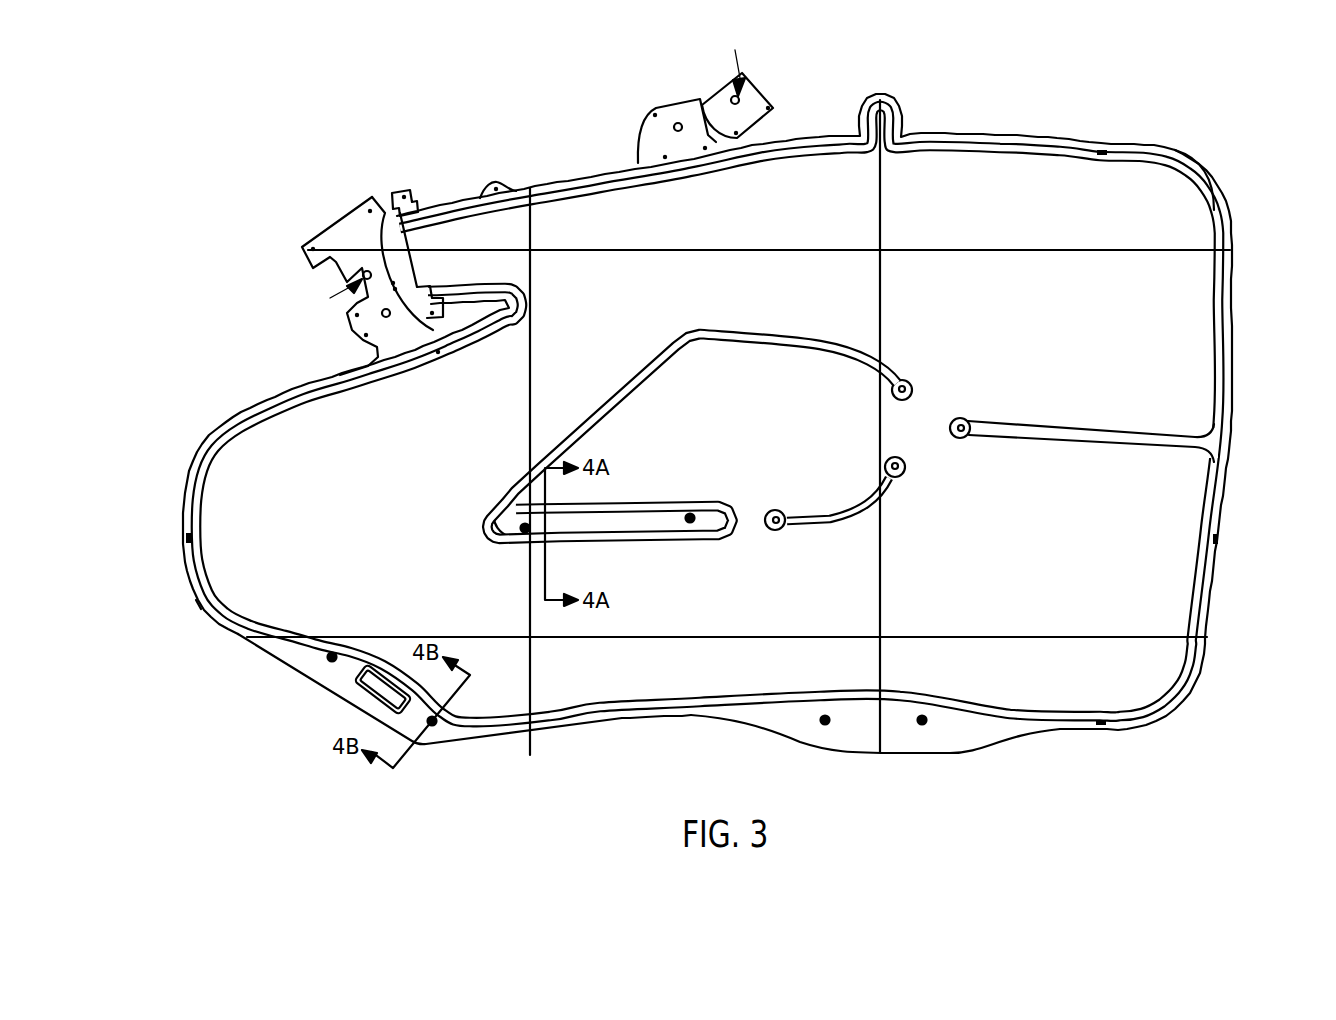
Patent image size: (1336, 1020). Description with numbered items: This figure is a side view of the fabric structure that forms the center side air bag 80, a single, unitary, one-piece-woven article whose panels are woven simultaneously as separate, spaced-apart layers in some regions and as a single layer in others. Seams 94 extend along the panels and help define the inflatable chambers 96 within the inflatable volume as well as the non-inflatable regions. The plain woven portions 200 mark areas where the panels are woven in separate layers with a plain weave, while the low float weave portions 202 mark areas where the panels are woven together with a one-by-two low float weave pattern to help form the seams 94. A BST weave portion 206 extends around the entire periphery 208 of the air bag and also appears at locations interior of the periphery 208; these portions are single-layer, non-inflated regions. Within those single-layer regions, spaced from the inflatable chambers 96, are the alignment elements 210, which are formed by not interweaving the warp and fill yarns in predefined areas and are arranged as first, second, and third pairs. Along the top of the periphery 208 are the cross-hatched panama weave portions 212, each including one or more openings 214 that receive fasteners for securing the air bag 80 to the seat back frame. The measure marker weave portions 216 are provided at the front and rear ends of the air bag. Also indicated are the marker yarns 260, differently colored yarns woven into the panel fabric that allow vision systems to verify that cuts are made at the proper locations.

The center side air bag 80 is at (700, 412).
The seams 94 is at (1152, 168).
The inflatable chambers 96 is at (937, 192).
The plain woven portions 200 is at (1010, 354).
The low float weave portions 202 is at (490, 500).
The BST weave portion 206 is at (913, 390).
The periphery 208 is at (200, 608).
The alignment elements 210 is at (522, 532).
The panama weave portions 212 is at (681, 108).
The openings 214 is at (318, 306).
The measure marker weave portions 216 is at (1102, 148).
The marker yarns 260 is at (1215, 242).